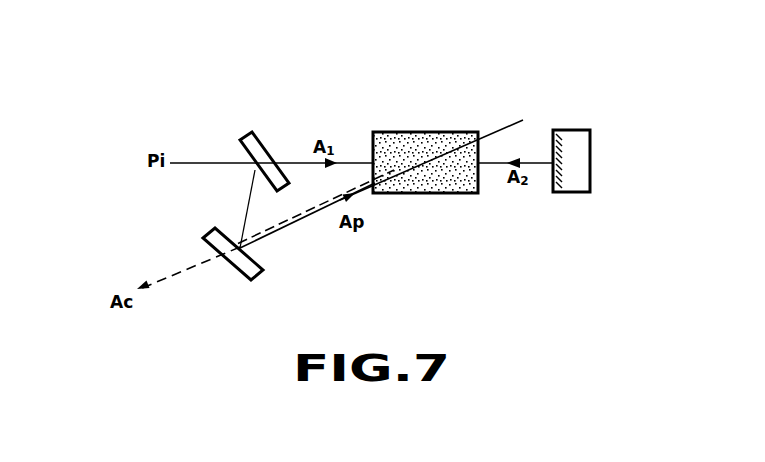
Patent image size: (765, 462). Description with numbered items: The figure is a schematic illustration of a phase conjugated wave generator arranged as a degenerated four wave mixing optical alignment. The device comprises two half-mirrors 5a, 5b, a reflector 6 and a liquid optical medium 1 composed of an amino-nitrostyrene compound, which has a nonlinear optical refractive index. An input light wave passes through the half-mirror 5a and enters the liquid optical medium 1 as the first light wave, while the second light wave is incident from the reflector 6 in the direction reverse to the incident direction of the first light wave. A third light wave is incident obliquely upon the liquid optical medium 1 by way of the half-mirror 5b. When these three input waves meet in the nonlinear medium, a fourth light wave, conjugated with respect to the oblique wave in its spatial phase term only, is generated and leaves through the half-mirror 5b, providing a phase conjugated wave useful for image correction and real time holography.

The liquid optical medium 1 is at (440, 130).
The half-mirror 5a is at (263, 137).
The half-mirror 5b is at (250, 276).
The reflector 6 is at (585, 158).